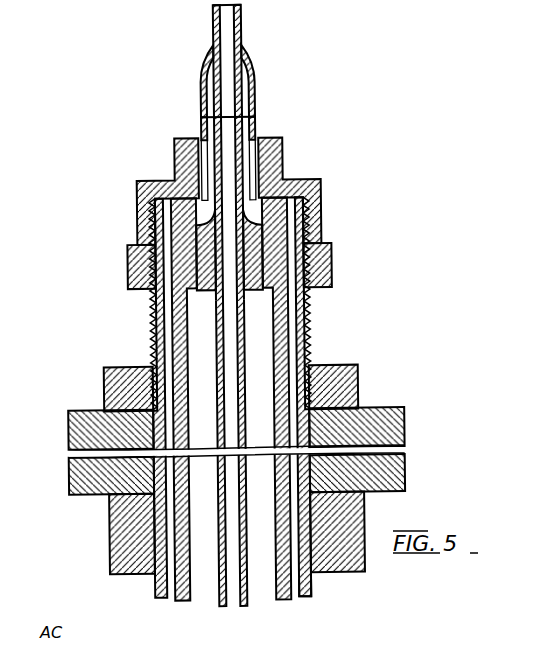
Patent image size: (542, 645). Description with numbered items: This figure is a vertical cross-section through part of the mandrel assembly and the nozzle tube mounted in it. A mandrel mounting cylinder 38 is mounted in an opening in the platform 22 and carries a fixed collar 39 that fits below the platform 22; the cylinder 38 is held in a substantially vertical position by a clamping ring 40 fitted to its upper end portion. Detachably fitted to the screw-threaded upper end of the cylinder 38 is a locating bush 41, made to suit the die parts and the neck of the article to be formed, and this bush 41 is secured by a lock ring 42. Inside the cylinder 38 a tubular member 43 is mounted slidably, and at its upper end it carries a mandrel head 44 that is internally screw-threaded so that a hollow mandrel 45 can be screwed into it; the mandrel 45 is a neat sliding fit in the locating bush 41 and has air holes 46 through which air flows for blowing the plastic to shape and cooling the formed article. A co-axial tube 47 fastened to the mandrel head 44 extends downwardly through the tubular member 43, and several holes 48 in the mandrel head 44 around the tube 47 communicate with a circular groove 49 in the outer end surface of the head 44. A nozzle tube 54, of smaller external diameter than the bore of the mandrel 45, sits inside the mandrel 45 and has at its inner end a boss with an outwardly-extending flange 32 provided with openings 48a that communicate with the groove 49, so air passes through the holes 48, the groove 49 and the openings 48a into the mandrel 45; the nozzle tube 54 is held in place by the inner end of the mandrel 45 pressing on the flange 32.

The nozzle tube 54 is at (241, 30).
The co-axial tube 47 is at (220, 580).
The air holes 46 is at (203, 94).
The hollow mandrel 45 is at (203, 116).
The locating bush 41 is at (323, 183).
The lock ring 42 is at (128, 254).
The mandrel head 44 is at (332, 258).
The tubular member 43 is at (310, 341).
The holes 48 is at (150, 298).
The openings 48a is at (307, 214).
The circular groove 49 is at (238, 253).
The outwardly-extending flange 32 is at (268, 250).
The clamping ring 40 is at (356, 366).
The platform 22 is at (75, 472).
The fixed collar 39 is at (122, 532).
The mandrel mounting cylinder 38 is at (313, 595).